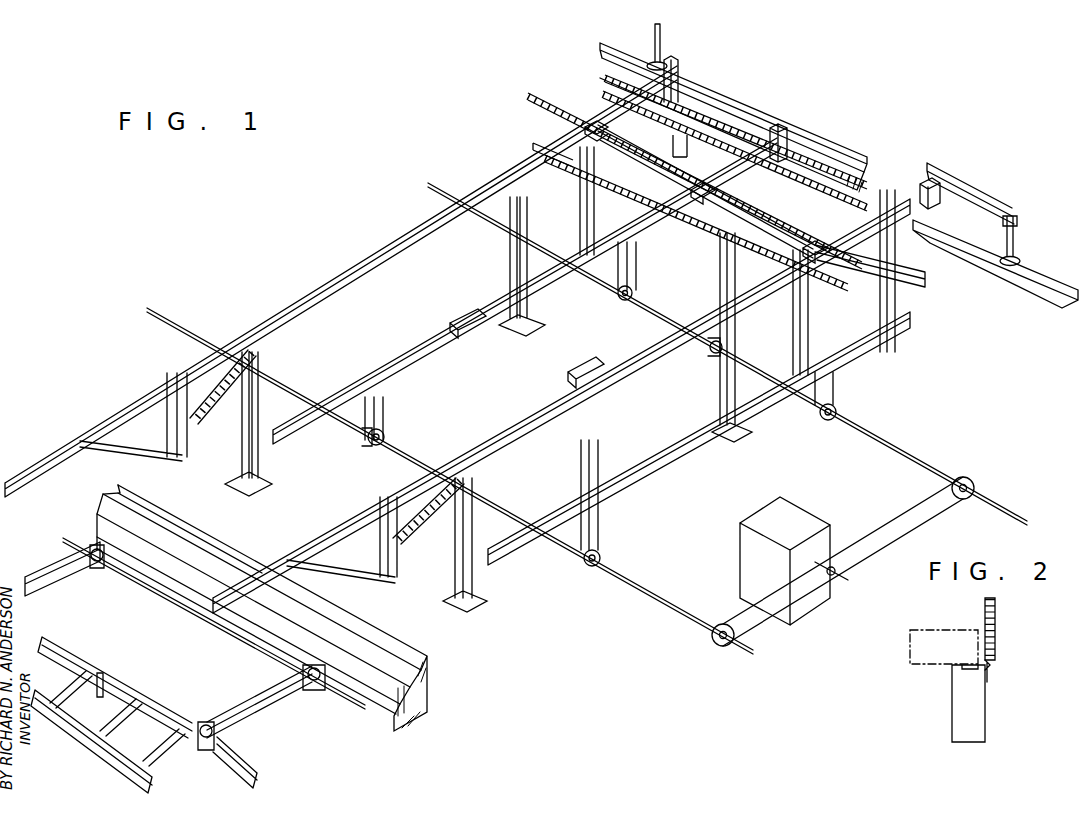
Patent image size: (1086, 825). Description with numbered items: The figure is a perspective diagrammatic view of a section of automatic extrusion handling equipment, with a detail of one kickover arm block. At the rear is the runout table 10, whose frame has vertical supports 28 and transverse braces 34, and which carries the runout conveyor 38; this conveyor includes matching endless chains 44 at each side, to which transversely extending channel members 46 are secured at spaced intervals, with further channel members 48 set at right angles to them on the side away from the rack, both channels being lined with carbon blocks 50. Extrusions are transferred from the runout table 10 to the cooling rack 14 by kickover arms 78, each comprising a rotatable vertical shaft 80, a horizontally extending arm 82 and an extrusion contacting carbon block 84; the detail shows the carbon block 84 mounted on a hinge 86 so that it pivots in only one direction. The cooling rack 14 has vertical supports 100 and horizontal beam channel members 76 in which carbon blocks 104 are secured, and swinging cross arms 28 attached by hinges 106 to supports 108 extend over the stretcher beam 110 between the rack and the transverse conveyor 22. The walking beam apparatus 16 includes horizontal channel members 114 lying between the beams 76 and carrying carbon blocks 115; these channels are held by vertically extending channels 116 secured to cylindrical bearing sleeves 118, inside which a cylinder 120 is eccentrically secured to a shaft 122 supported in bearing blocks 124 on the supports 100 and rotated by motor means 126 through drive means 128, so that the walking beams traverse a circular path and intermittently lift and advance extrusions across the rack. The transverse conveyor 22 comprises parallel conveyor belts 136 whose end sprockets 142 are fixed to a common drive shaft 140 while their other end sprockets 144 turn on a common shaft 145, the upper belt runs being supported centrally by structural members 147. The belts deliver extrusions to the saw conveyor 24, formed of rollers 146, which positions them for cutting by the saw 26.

In FIG. 1, the runout table 10 is at (757, 113).
In FIG. 1, the cooling rack 14 is at (293, 292).
In FIG. 1, the walking beam apparatus 16 is at (636, 494).
In FIG. 1, the transverse conveyor 22 is at (105, 548).
In FIG. 1, the saw conveyor 24 is at (112, 670).
In FIG. 1, the saw 26 is at (1047, 269).
In FIG. 1, the vertical supports / swinging cross arms 28 is at (900, 290).
In FIG. 1, the transverse braces 34 is at (842, 246).
In FIG. 1, the runout conveyor 38 is at (825, 230).
In FIG. 1, the endless chains 44 is at (838, 288).
In FIG. 1, the channel members 46 is at (735, 186).
In FIG. 1, the channel members 48 is at (790, 135).
In FIG. 1, the carbon blocks 50 is at (615, 115).
In FIG. 1, the horizontal beam channel members 76 is at (572, 140).
In FIG. 1, the kickover arms 78 is at (984, 186).
In FIG. 2, the kickover arms 78 is at (995, 628).
In FIG. 1, the rotatable vertical shaft 80 is at (1014, 236).
In FIG. 1, the horizontally extending arm 82 is at (1012, 212).
In FIG. 1, the extrusion contacting carbon block 84 is at (924, 185).
In FIG. 2, the extrusion contacting carbon block 84 is at (950, 702).
In FIG. 2, the hinge 86 is at (983, 663).
In FIG. 1, the vertical supports 100 is at (462, 548).
In FIG. 1, the carbon blocks 104 is at (590, 366).
In FIG. 1, the hinges 106 is at (382, 560).
In FIG. 1, the supports 108 is at (456, 532).
In FIG. 1, the stretcher beam 110 is at (430, 658).
In FIG. 1, the horizontal channel members 114 is at (440, 360).
In FIG. 1, the carbon blocks 115 is at (452, 322).
In FIG. 1, the vertically extending channels 116 is at (390, 412).
In FIG. 1, the cylindrical bearing sleeves 118 is at (370, 442).
In FIG. 1, the cylinder 120 is at (388, 440).
In FIG. 1, the shaft 122 is at (402, 460).
In FIG. 1, the bearing blocks 124 is at (489, 494).
In FIG. 1, the motor means 126 is at (740, 570).
In FIG. 1, the drive means 128 is at (760, 638).
In FIG. 1, the conveyor belts 136 is at (270, 714).
In FIG. 1, the common drive shaft 140 is at (258, 762).
In FIG. 1, the end sprockets 142 is at (205, 724).
In FIG. 1, the end sprockets 144 is at (330, 668).
In FIG. 1, the common shaft 145 is at (235, 644).
In FIG. 1, the rollers 146 is at (150, 762).
In FIG. 1, the structural members 147 is at (62, 580).